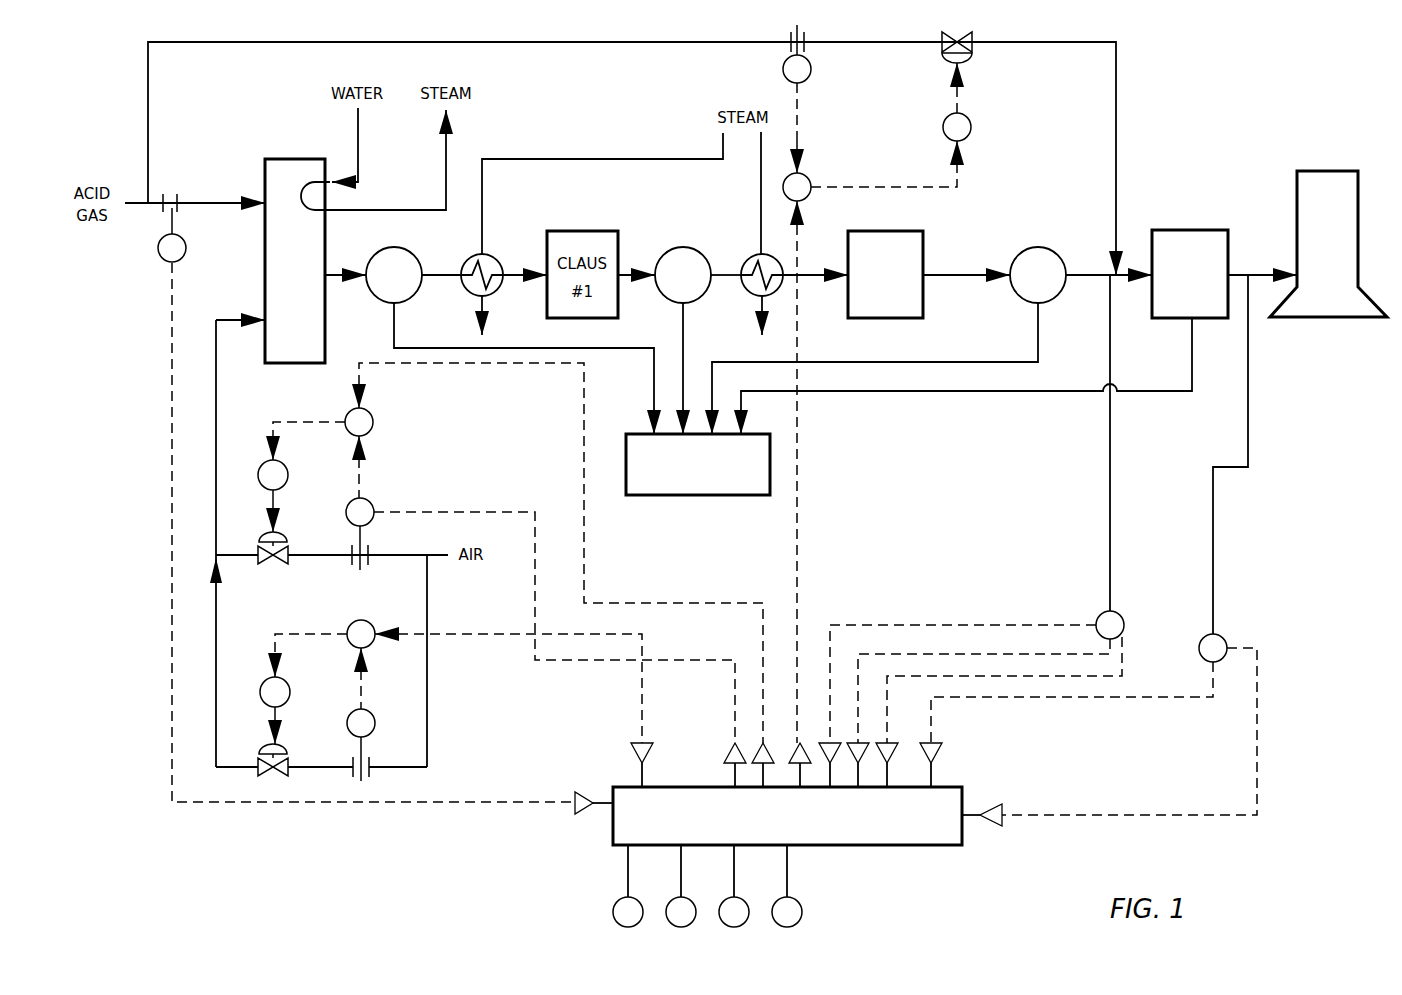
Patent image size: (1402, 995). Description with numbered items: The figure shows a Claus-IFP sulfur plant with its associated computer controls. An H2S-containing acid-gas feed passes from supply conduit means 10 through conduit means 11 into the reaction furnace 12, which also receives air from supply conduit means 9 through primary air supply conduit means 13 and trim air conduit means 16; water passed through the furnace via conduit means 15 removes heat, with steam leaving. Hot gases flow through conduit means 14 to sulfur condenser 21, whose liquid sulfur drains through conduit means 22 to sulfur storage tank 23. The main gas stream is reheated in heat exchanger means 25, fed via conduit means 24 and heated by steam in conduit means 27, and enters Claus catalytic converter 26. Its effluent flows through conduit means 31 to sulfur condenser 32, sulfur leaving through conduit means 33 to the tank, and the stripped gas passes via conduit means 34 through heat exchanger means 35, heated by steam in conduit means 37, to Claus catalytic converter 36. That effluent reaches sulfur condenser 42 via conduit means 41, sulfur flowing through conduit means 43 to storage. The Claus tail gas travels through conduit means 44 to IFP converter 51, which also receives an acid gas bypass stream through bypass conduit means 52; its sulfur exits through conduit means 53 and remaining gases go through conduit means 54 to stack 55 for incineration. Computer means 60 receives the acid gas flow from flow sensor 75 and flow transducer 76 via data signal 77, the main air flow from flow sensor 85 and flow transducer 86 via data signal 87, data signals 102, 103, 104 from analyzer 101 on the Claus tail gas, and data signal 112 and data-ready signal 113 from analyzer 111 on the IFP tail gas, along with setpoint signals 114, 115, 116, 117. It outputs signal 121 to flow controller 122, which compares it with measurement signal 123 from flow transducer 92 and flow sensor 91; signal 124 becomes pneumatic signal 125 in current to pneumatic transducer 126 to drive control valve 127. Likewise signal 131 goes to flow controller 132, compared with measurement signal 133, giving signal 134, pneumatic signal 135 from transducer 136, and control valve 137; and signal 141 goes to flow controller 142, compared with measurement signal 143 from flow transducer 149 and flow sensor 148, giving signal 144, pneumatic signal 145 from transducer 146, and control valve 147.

The air supply conduit means 9 is at (430, 560).
The acid-gas supply conduit means 10 is at (140, 205).
The acid gas conduit means 11 is at (216, 202).
The reaction furnace 12 is at (325, 335).
The primary air supply conduit means 13 is at (230, 555).
The furnace effluent conduit means 14 is at (340, 275).
The water conduit means 15 is at (358, 165).
The trim air conduit means 16 is at (216, 600).
The sulfur condenser 21 is at (415, 254).
The sulfur conduit means 22 is at (394, 318).
The sulfur storage tank 23 is at (695, 495).
The conduit means 24 is at (440, 275).
The heat exchanger means 25 is at (497, 262).
The Claus catalytic converter 26 is at (547, 297).
The steam conduit means 27 is at (623, 159).
The conduit means 31 is at (630, 275).
The sulfur condenser 32 is at (668, 300).
The sulfur conduit means 33 is at (683, 342).
The conduit means 34 is at (725, 278).
The heat exchanger means 35 is at (748, 262).
The Claus catalytic converter 36 is at (923, 240).
The steam conduit means 37 is at (761, 180).
The conduit means 41 is at (950, 278).
The sulfur condenser 42 is at (1052, 252).
The sulfur conduit means 43 is at (952, 362).
The conduit means 44 is at (1072, 278).
The IFP converter 51 is at (1210, 318).
The bypass conduit means 52 is at (1075, 42).
The conduit means 53 is at (950, 391).
The conduit means 54 is at (1240, 275).
The stack 55 is at (1327, 318).
The computer means 60 is at (910, 845).
The flow sensor 75 is at (170, 194).
The flow transducer 76 is at (187, 248).
The data signal 77 is at (488, 802).
The flow sensor 85 is at (350, 560).
The flow transducer 86 is at (372, 523).
The data signal 87 is at (495, 512).
The flow sensor 91 is at (368, 760).
The flow transducer 92 is at (372, 712).
The analyzer 101 is at (1122, 612).
The data signal 102 is at (848, 625).
The data signal 103 is at (860, 700).
The data signal 104 is at (1122, 658).
The analyzer 111 is at (1225, 637).
The data signal 112 is at (1165, 697).
The data-ready signal 113 is at (1165, 815).
The setpoint signal 114 is at (628, 885).
The setpoint signal 115 is at (681, 884).
The setpoint signal 116 is at (734, 884).
The setpoint signal 117 is at (787, 883).
The setpoint signal 121 is at (497, 634).
The flow controller 122 is at (372, 622).
The measurement signal 123 is at (360, 685).
The control signal 124 is at (305, 634).
The pneumatic signal 125 is at (270, 718).
The current to pneumatic transducer 126 is at (290, 695).
The control valve 127 is at (290, 748).
The setpoint signal 131 is at (640, 603).
The flow controller 132 is at (374, 422).
The measurement signal 133 is at (360, 478).
The control signal 134 is at (290, 422).
The pneumatic signal 135 is at (283, 490).
The current to pneumatic transducer 136 is at (285, 463).
The control valve 137 is at (290, 538).
The setpoint signal 141 is at (800, 335).
The flow controller 142 is at (808, 178).
The measurement signal 143 is at (800, 128).
The control signal 144 is at (852, 187).
The pneumatic signal 145 is at (957, 95).
The current to pneumatic transducer 146 is at (945, 138).
The control valve 147 is at (975, 58).
The flow sensor 148 is at (783, 55).
The flow transducer 149 is at (812, 69).